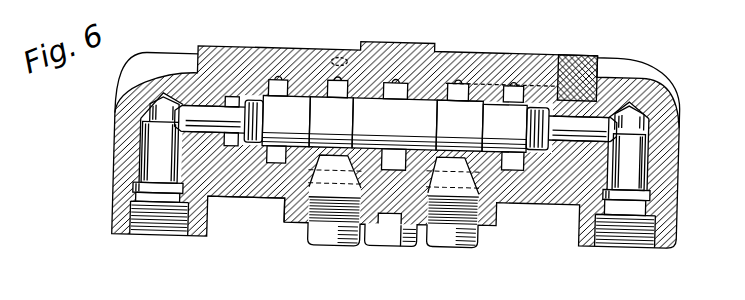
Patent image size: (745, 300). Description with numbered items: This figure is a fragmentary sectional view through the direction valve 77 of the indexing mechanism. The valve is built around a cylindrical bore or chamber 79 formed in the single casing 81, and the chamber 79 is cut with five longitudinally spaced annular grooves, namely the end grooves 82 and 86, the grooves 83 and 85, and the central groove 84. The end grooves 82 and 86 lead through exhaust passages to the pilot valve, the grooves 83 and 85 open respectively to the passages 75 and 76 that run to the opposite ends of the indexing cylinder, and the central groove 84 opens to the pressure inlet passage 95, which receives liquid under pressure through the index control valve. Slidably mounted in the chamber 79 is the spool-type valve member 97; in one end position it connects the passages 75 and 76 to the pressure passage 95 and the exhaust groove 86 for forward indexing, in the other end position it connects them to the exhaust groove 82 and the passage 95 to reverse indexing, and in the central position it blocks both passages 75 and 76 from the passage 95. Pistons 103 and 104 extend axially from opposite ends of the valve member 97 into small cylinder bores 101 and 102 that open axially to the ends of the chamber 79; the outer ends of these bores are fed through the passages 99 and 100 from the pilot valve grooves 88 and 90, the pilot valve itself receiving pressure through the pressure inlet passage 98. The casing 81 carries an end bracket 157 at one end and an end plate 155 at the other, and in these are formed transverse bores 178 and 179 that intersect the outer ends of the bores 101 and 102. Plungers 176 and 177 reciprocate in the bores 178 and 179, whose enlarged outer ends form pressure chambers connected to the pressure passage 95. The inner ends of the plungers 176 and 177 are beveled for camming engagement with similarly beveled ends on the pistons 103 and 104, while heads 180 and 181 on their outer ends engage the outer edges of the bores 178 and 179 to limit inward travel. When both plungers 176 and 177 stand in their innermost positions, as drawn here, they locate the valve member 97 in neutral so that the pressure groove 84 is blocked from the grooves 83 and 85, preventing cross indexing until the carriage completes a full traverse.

The direction valve 77 is at (110, 120).
The end bracket 157 is at (182, 59).
The end plate 155 is at (670, 70).
The passage 100 is at (577, 50).
The cylindrical bore or chamber 79 is at (364, 100).
The valve member 97 is at (431, 98).
The annular groove 82 is at (276, 83).
The annular groove 83 is at (331, 82).
The annular groove 88 is at (338, 59).
The central groove 84 is at (394, 83).
The annular groove 90 is at (452, 62).
The annular groove 85 is at (469, 70).
The casing 81 is at (511, 62).
The annular groove 86 is at (537, 72).
The passage 99 is at (249, 51).
The small cylinder bore 101 is at (192, 100).
The piston 103 is at (190, 153).
The small cylinder bore 102 is at (573, 104).
The piston 104 is at (570, 148).
The transverse bore 178 is at (147, 152).
The plunger 176 is at (142, 165).
The head 180 is at (134, 195).
The transverse bore 179 is at (672, 104).
The plunger 177 is at (657, 128).
The head 181 is at (662, 200).
The pressure inlet passage 95 is at (222, 203).
The passage 75 is at (313, 239).
The pressure inlet passage 98 is at (377, 246).
The passage 76 is at (452, 247).